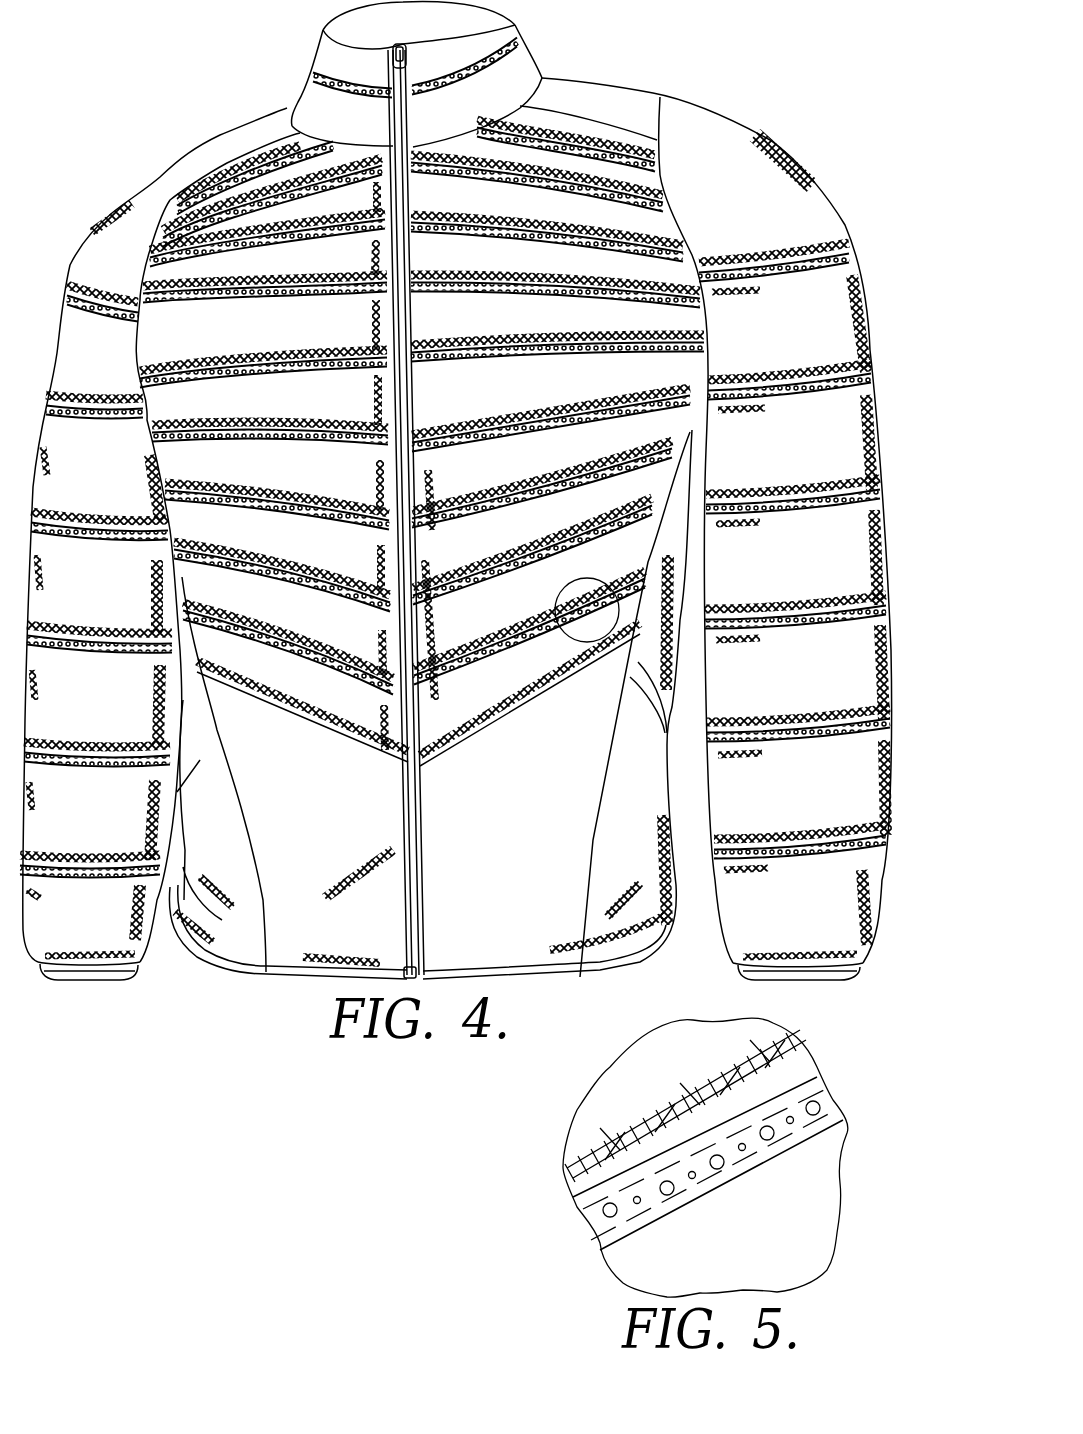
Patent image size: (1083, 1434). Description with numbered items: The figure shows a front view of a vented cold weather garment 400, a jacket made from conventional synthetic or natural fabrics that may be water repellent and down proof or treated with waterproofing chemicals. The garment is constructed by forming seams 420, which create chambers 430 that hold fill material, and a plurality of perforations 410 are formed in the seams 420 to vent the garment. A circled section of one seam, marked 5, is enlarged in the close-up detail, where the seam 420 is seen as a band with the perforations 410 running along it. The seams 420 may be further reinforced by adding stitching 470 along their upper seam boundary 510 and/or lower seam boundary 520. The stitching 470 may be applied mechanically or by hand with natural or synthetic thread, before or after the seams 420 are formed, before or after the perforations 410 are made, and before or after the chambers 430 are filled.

In FIG. 4, the cold weather garment 400 is at (772, 69).
In FIG. 4, the perforations 410 is at (830, 260).
In FIG. 5, the perforations 410 is at (814, 1116).
In FIG. 4, the seams 420 is at (846, 258).
In FIG. 5, the seams 420 is at (829, 1101).
In FIG. 4, the chambers 430 is at (879, 371).
In FIG. 4, the stitching 470 is at (881, 851).
In FIG. 5, the stitching 470 is at (600, 1243).
In FIG. 4, the detail view circle 5 is at (583, 643).
In FIG. 5, the upper seam boundary 510 is at (812, 1078).
In FIG. 5, the lower seam boundary 520 is at (836, 1130).